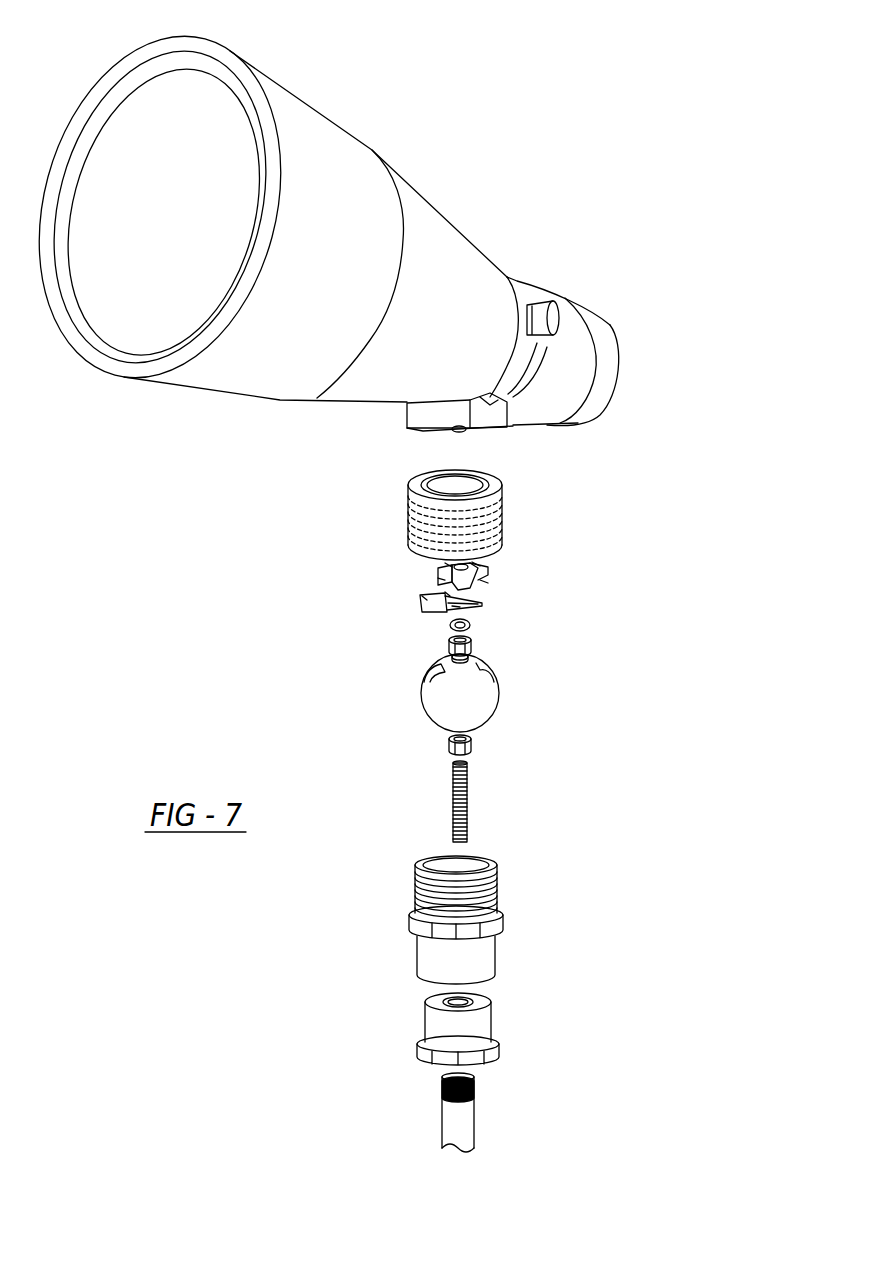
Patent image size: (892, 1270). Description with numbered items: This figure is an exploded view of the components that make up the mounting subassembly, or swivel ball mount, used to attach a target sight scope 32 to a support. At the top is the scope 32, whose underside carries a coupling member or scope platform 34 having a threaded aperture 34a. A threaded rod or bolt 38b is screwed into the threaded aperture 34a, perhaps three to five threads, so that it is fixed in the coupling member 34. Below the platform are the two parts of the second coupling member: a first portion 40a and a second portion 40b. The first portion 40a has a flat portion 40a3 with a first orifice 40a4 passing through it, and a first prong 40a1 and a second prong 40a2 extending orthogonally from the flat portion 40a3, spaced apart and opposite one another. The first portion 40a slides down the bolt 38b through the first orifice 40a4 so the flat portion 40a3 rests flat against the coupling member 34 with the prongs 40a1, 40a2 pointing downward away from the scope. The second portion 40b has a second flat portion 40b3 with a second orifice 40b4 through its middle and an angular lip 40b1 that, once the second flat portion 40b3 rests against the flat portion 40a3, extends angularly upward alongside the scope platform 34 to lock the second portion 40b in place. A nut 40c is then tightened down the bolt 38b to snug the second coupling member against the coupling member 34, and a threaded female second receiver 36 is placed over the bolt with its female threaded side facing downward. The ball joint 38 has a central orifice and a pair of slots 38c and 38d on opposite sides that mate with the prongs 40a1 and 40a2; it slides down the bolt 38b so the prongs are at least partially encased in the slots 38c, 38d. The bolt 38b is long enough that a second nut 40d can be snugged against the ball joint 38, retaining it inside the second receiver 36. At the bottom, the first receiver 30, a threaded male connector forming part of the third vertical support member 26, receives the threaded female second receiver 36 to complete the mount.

The third vertical support member 26 is at (428, 1105).
The first receiver 30 is at (496, 945).
The target sight scope 32 is at (463, 208).
The coupling member or scope platform 34 is at (500, 413).
The threaded aperture 34a is at (457, 431).
The threaded female second receiver 36 is at (501, 508).
The ball joint 38 is at (460, 698).
The threaded rod or bolt 38b is at (468, 795).
The slot 38c is at (424, 677).
The slot 38d is at (478, 669).
The first portion 40a is at (488, 573).
The first prong 40a1 is at (440, 580).
The second prong 40a2 is at (490, 583).
The flat portion 40a3 is at (478, 564).
The first orifice 40a4 is at (448, 565).
The second portion 40b is at (479, 600).
The angular lip 40b1 is at (428, 598).
The second flat portion 40b3 is at (455, 607).
The second orifice 40b4 is at (447, 594).
The nut 40c is at (473, 643).
The second nut 40d is at (450, 743).